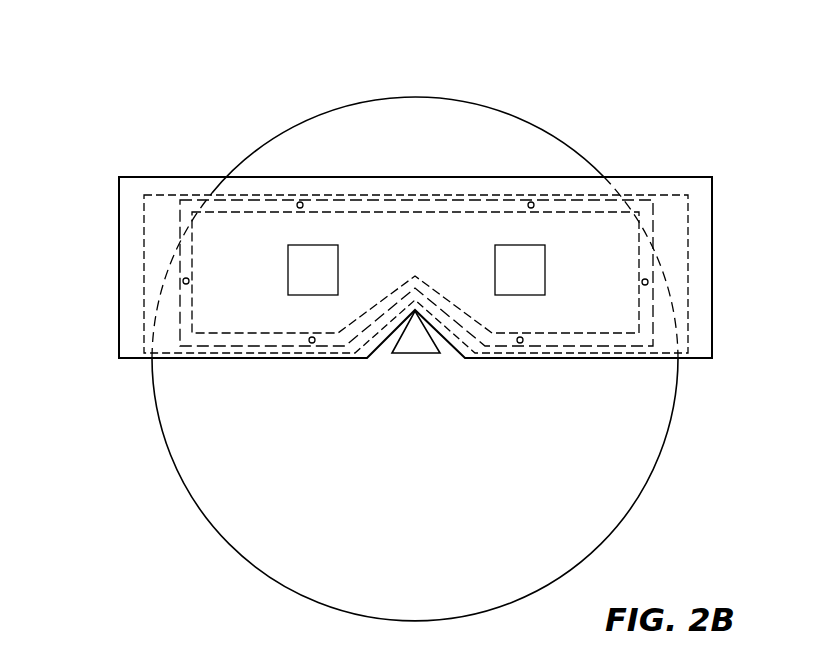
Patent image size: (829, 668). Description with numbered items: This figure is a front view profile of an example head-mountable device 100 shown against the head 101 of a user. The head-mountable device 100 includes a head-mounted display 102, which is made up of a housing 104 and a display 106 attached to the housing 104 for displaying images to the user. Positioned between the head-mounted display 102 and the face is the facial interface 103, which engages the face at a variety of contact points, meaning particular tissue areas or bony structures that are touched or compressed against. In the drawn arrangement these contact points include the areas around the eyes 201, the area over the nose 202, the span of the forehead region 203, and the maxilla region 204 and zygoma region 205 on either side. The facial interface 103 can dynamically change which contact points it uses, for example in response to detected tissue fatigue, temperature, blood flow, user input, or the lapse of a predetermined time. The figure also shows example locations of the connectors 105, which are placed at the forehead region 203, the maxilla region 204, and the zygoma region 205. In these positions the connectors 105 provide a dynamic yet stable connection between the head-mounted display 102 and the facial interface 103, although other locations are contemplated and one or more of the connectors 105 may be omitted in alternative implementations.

The head-mountable device 100 is at (124, 122).
The head 101 is at (634, 472).
The head-mounted display 102 is at (729, 253).
The facial interface 103 is at (573, 206).
The housing 104 is at (713, 181).
The connector 105 is at (300, 209).
The display 106 is at (670, 196).
The eyes 201 is at (495, 258).
The nose 202 is at (409, 354).
The forehead region 203 is at (411, 152).
The maxilla region 204 is at (312, 363).
The zygoma region 205 is at (176, 281).